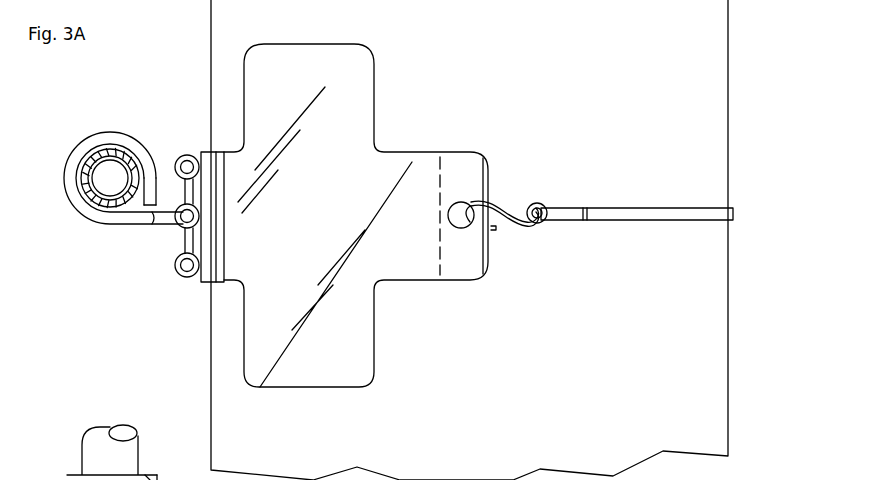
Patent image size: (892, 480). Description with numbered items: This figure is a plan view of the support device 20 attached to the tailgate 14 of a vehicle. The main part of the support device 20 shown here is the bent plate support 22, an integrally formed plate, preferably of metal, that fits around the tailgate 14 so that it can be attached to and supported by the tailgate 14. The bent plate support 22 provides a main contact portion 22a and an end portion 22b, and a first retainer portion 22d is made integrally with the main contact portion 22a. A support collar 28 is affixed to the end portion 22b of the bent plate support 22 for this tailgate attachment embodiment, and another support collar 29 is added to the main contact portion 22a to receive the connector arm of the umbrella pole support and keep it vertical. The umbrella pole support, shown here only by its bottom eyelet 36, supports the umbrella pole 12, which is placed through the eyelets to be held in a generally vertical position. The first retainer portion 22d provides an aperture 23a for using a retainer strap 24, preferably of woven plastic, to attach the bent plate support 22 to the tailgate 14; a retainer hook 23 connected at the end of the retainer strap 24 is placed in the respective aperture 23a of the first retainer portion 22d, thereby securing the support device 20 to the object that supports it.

The umbrella pole 12 is at (108, 152).
The tailgate 14 is at (578, 59).
The support device 20 is at (423, 332).
The bent plate support 22 is at (238, 320).
The main contact portion 22a is at (337, 212).
The end portion 22b is at (202, 205).
The first retainer portion 22d is at (457, 168).
The retainer hook 23 is at (512, 218).
The aperture 23a is at (458, 220).
The retainer strap 24 is at (673, 215).
The support collar 28 is at (191, 154).
The support collar 29 is at (174, 206).
The bottom eyelet 36 is at (110, 217).